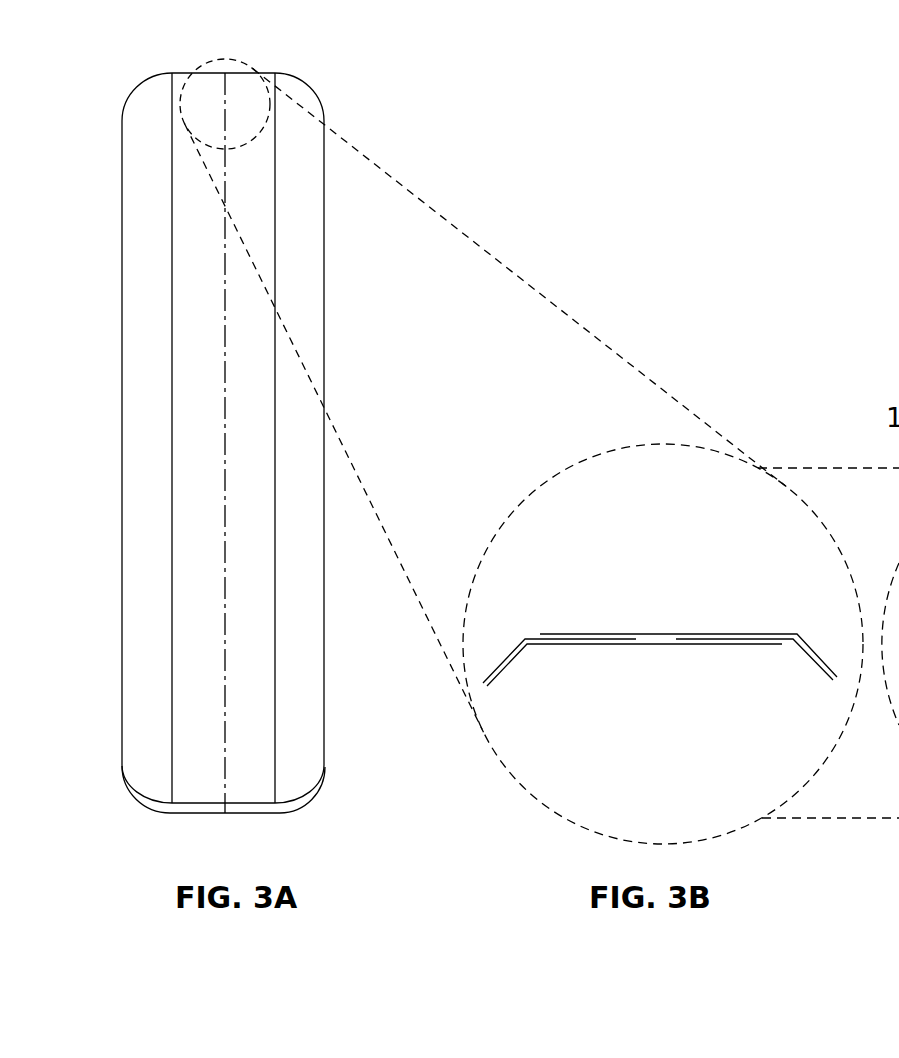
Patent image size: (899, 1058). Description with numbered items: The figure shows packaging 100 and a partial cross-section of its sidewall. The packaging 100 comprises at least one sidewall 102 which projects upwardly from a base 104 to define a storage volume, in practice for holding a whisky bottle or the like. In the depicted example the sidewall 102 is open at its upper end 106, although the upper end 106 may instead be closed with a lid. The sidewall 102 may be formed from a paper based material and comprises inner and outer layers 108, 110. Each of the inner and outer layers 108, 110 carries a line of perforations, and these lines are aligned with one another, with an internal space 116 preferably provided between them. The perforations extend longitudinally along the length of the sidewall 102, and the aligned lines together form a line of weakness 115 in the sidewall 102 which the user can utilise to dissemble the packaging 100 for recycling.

In FIG. 3A, the packaging 100 is at (380, 69).
In FIG. 3A, the sidewall 102 is at (312, 313).
In FIG. 3B, the sidewall 102 is at (719, 566).
In FIG. 3A, the base 104 is at (132, 780).
In FIG. 3A, the upper end 106 is at (322, 116).
In FIG. 3A, the line of weakness 115 is at (223, 616).
In FIG. 3B, the inner layer 108 is at (497, 668).
In FIG. 3B, the outer layer 110 is at (572, 633).
In FIG. 3B, the internal space 116 is at (662, 642).